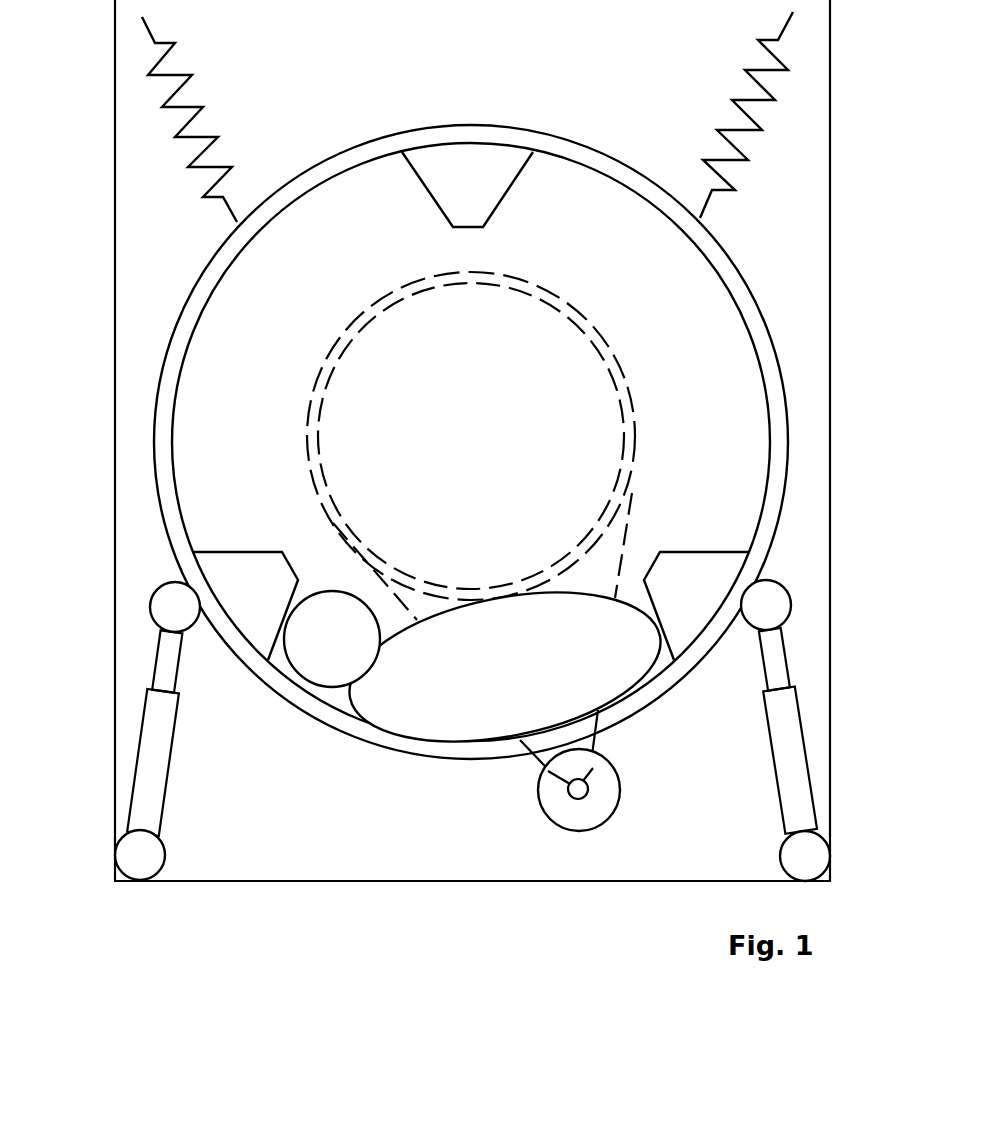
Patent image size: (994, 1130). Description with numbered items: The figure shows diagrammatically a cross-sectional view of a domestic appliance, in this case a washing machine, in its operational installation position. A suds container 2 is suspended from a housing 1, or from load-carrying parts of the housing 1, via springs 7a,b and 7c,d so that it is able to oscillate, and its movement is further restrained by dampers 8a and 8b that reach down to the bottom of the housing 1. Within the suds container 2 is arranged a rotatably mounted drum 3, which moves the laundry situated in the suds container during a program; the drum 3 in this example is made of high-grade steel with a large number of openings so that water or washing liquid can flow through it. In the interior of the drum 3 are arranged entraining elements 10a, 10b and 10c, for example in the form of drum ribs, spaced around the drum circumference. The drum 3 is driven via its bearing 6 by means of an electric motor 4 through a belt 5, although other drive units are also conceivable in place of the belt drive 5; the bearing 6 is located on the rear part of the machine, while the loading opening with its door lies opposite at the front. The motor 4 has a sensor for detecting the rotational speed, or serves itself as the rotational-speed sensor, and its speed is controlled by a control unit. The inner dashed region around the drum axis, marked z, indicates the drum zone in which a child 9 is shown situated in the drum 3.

The housing 1 is at (830, 352).
The suds container 2 is at (663, 701).
The drum 3 is at (348, 710).
The motor 4 is at (620, 801).
The belt drive 5 is at (627, 527).
The bearing 6 is at (618, 383).
The springs 7a,b is at (210, 103).
The springs 7c,d is at (742, 160).
The damper 8a is at (168, 762).
The damper 8b is at (774, 753).
The child 9 is at (488, 692).
The entraining element 10a is at (433, 187).
The entraining element 10b is at (256, 573).
The entraining element 10c is at (711, 570).
The drum axis z is at (566, 477).